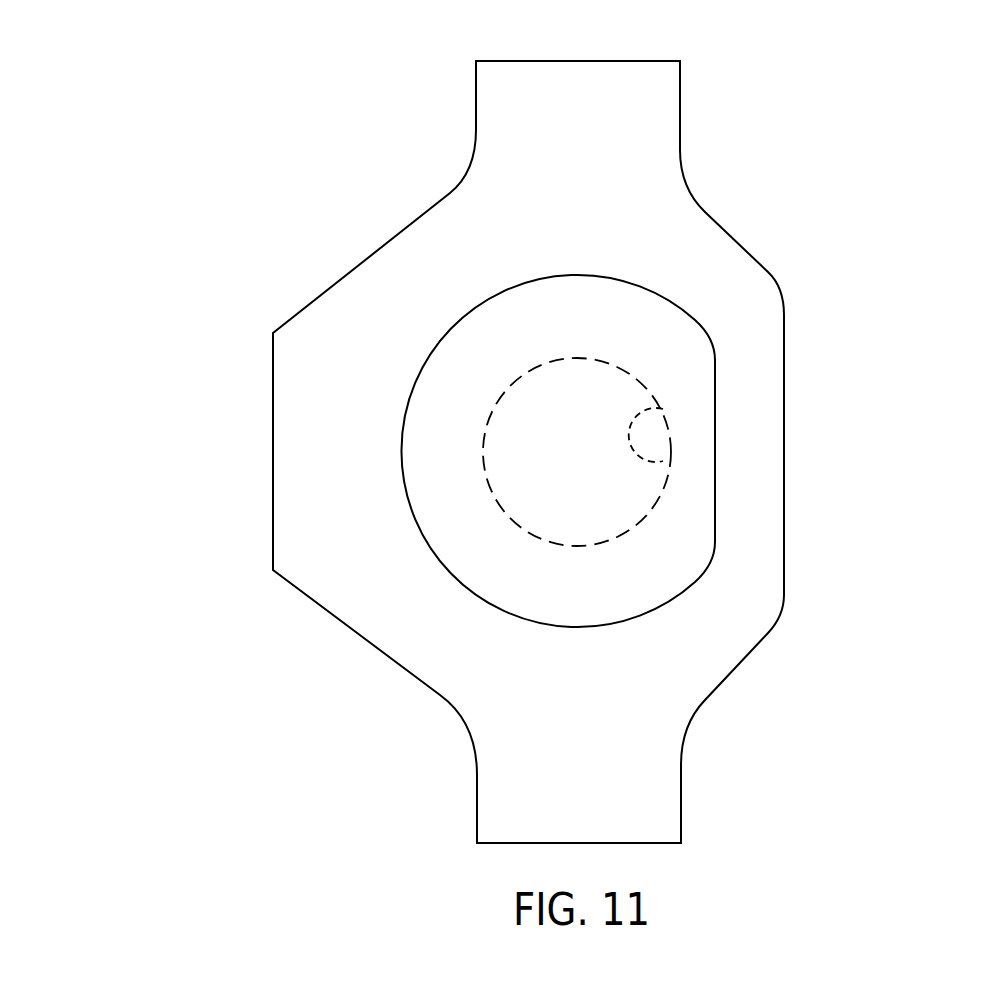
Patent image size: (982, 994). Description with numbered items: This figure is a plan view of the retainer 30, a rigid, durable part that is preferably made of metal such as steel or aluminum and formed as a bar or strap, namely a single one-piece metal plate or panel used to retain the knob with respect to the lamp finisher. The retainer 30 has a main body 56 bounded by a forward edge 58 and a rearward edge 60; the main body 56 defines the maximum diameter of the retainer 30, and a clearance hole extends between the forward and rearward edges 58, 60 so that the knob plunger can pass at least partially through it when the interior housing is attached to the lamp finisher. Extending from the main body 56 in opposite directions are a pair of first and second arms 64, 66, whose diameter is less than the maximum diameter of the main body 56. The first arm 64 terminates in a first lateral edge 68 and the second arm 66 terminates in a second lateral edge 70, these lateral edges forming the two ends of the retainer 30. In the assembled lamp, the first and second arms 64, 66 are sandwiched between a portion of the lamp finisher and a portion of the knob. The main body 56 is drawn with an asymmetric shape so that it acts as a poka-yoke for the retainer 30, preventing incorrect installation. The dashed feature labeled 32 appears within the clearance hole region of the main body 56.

The retainer 30 is at (852, 163).
The bore 32 is at (663, 407).
The main body 56 is at (328, 494).
The forward edge 58 is at (273, 416).
The rearward edge 60 is at (788, 498).
The first arm 64 is at (477, 800).
The second arm 66 is at (476, 106).
The first lateral edge 68 is at (655, 843).
The second lateral edge 70 is at (655, 61).